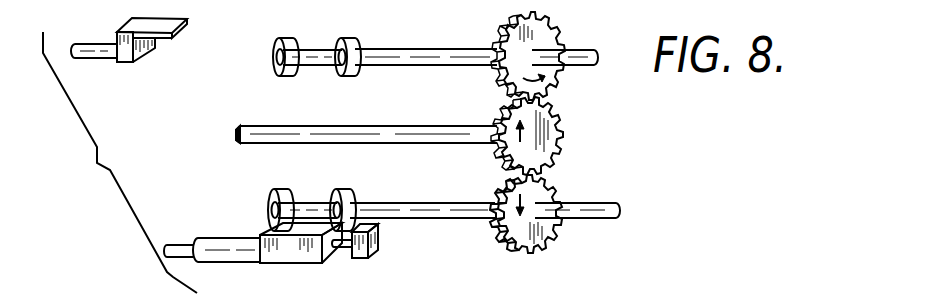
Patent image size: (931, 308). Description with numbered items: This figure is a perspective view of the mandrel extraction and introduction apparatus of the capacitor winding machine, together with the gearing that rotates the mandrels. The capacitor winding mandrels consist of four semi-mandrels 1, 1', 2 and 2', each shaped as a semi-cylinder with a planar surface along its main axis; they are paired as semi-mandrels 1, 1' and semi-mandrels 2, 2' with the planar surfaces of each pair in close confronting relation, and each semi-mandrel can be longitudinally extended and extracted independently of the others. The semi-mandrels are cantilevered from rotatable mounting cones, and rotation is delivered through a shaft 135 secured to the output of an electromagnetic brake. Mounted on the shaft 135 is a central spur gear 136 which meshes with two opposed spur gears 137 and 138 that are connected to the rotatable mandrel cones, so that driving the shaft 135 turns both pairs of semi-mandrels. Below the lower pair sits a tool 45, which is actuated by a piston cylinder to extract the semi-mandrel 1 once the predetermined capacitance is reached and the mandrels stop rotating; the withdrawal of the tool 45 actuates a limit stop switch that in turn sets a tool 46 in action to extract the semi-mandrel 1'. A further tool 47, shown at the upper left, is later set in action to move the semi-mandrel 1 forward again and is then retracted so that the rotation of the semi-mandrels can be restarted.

The tool 47 is at (179, 27).
The semi-mandrel 2 is at (307, 48).
The semi-mandrel 2' is at (466, 49).
The shaft 135 is at (448, 130).
The spur gear 138 is at (544, 38).
The central spur gear 136 is at (548, 133).
The spur gear 137 is at (548, 230).
The semi-mandrel 1 is at (302, 199).
The semi-mandrel 1' is at (475, 198).
The tool 45 is at (282, 252).
The tool 46 is at (377, 247).